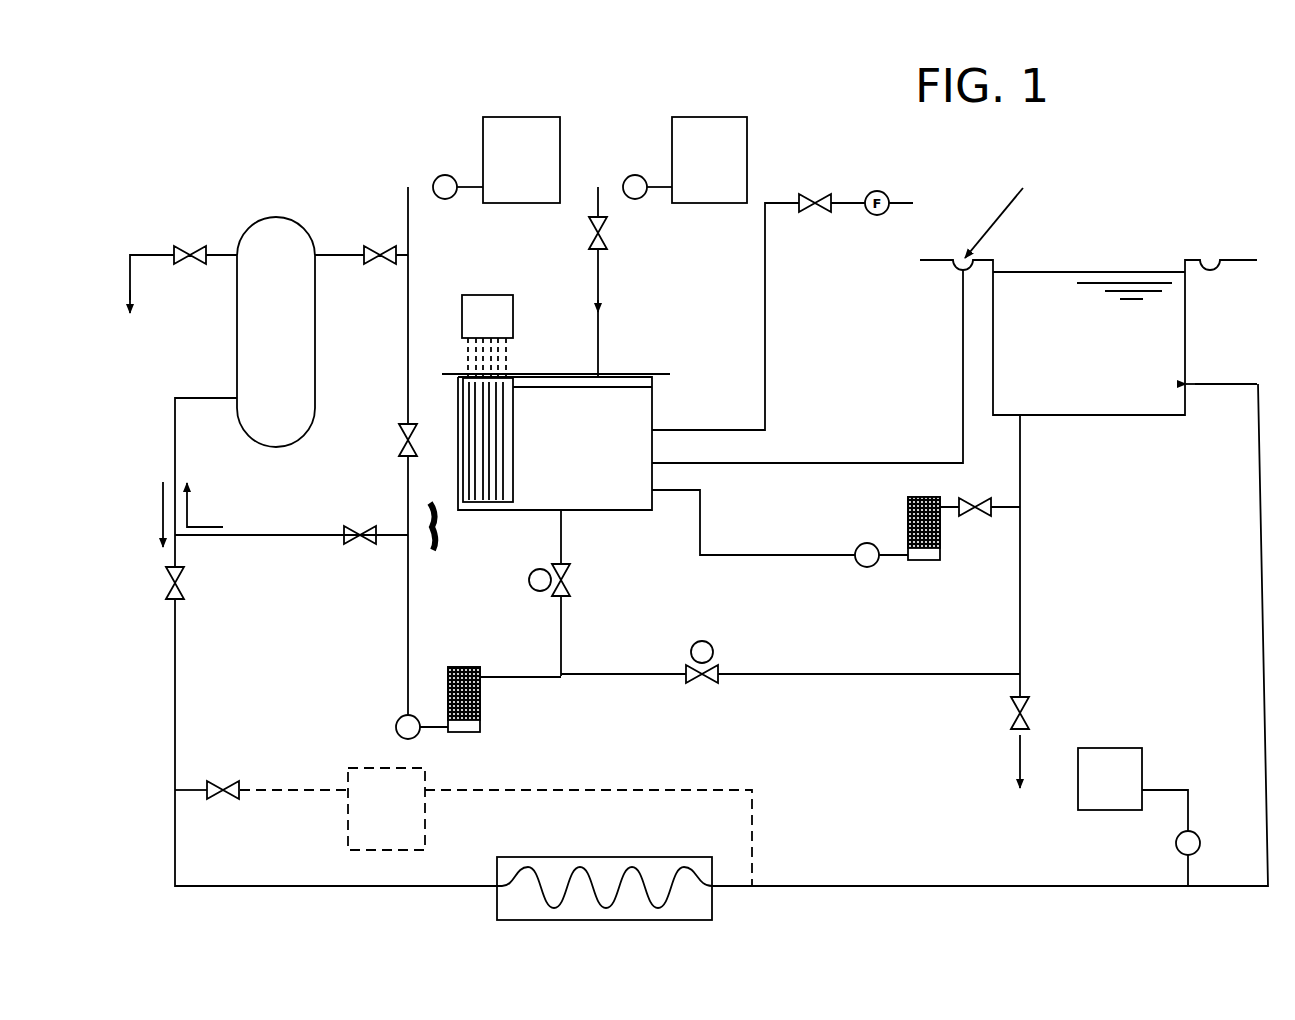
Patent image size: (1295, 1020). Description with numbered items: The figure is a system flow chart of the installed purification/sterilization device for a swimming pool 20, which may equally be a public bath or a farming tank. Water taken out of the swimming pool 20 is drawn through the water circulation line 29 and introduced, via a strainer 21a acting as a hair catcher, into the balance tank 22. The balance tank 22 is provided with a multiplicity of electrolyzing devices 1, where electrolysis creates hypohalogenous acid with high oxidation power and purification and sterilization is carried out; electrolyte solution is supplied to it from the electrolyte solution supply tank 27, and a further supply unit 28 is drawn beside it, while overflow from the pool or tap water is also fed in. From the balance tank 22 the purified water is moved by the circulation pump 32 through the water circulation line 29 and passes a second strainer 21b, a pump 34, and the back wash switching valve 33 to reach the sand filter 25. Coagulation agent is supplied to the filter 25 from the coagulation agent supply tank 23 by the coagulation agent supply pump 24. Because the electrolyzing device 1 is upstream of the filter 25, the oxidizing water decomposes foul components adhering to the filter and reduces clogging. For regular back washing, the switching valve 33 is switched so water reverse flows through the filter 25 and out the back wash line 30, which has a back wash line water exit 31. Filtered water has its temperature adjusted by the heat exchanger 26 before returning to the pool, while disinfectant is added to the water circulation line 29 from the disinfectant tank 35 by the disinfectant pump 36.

The electrolyzing device 1 is at (463, 442).
The swimming pool 20 is at (1118, 262).
The strainer 21a is at (906, 524).
The strainer 21b is at (488, 692).
The balance tank 22 is at (574, 593).
The coagulation agent supply tank 23 is at (522, 115).
The coagulation agent supply pump 24 is at (441, 175).
The filter 25 is at (273, 218).
The heat exchanger 26 is at (604, 878).
The electrolyte solution supply tank 27 is at (631, 174).
The supply box 28 is at (710, 113).
The water circulation line 29 is at (818, 880).
The back wash line 30 is at (182, 442).
The back wash line water exit 31 is at (130, 317).
The circulation pump 32 is at (463, 827).
The back wash switching valve 33 is at (197, 250).
The pump 34 is at (396, 719).
The disinfectant tank 35 is at (1110, 746).
The disinfectant pump 36 is at (1201, 840).